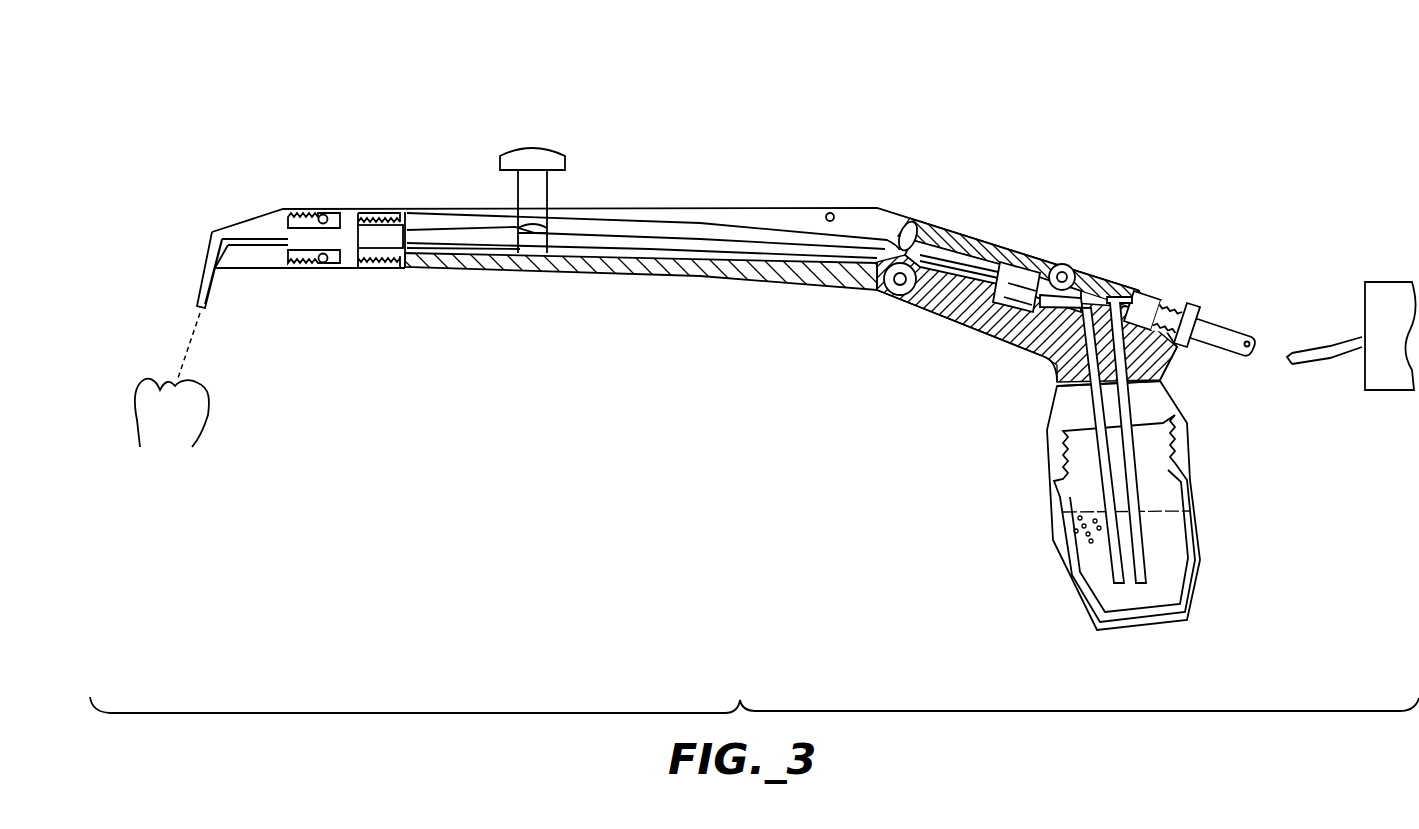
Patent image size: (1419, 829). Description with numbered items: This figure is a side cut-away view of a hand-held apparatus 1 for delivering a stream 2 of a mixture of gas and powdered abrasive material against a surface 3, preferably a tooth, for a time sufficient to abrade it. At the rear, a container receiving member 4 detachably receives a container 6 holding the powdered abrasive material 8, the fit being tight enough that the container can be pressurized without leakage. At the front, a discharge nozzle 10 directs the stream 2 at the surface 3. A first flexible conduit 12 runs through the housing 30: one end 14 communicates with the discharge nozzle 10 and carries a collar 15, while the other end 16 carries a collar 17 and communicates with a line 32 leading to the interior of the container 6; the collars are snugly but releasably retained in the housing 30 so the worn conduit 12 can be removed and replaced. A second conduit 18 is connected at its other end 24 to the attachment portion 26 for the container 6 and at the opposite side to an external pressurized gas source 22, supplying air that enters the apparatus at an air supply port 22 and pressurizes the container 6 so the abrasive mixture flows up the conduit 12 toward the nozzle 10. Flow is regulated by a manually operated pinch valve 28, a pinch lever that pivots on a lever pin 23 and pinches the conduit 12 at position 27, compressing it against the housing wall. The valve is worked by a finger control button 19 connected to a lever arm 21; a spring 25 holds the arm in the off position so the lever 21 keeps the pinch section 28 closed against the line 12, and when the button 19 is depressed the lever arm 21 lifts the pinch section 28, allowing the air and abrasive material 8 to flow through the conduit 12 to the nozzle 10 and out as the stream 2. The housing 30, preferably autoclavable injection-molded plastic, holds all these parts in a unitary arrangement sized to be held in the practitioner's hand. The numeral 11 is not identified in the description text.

The apparatus 1 is at (792, 128).
The stream 2 is at (210, 348).
The surface 3 is at (222, 406).
The container receiving member 4 is at (1038, 427).
The container 6 is at (1060, 557).
The powdered abrasive material 8 is at (1173, 540).
The discharge nozzle 10 is at (215, 297).
The nozzle connector 11 is at (265, 235).
The first flexible conduit 12 is at (640, 246).
The end of first flexible conduit 14 is at (348, 245).
The collar 15 is at (383, 215).
The other end of first flexible conduit 16 is at (1050, 275).
The collar 17 is at (1015, 262).
The second conduit 18 is at (1232, 324).
The finger control button 19 is at (535, 150).
The lever arm 21 is at (615, 207).
The external gas source 22 is at (1290, 357).
The lever pin 23 is at (833, 212).
The other end of second conduit 24 is at (1190, 310).
The spring 25 is at (520, 255).
The attachment portion 26 is at (1140, 298).
The pinch point 27 is at (888, 277).
The pinch valve 28 is at (907, 232).
The housing 30 is at (720, 285).
The line 32 is at (1075, 383).